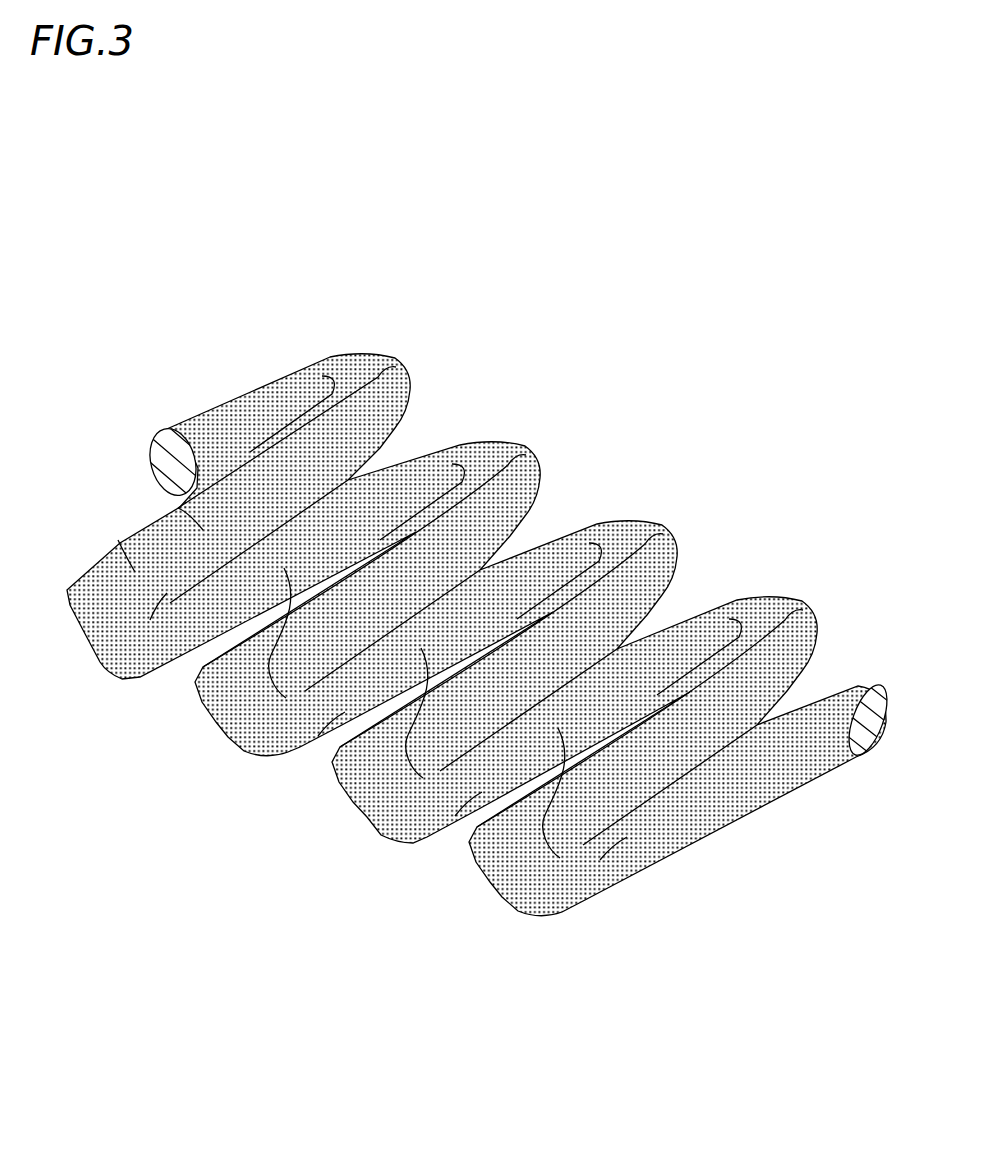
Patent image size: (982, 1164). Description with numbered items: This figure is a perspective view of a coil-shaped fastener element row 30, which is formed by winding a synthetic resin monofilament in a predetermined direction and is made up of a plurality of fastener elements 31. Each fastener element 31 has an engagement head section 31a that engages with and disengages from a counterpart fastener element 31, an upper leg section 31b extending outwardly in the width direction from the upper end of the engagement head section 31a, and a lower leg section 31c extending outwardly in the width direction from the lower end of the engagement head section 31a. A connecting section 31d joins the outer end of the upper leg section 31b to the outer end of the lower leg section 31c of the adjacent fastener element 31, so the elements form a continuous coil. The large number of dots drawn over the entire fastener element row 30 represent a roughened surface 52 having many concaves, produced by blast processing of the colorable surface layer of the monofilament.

The fastener element row 30 is at (225, 394).
The fastener element 31 is at (130, 683).
The engagement head section 31a is at (110, 672).
The upper leg section 31b is at (178, 508).
The lower leg section 31c is at (203, 660).
The connecting section 31d is at (396, 367).
The roughened surface 52 is at (128, 557).